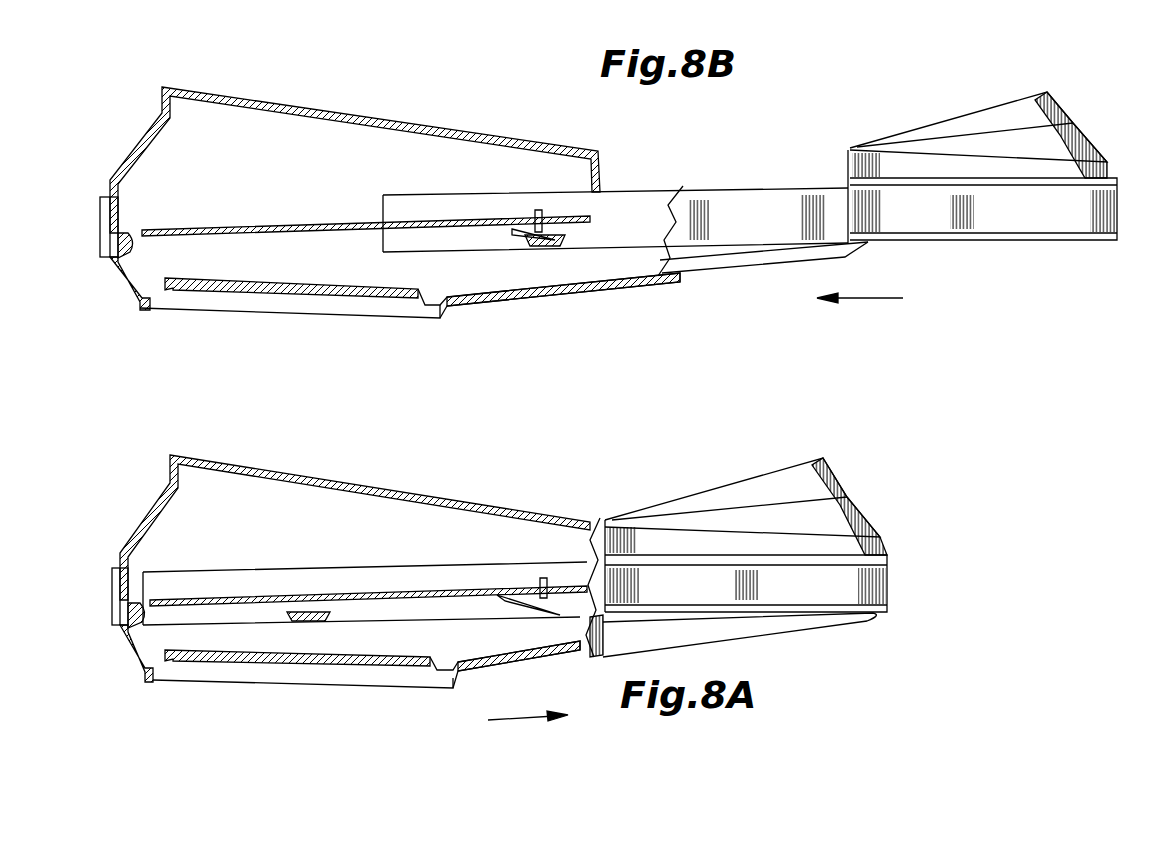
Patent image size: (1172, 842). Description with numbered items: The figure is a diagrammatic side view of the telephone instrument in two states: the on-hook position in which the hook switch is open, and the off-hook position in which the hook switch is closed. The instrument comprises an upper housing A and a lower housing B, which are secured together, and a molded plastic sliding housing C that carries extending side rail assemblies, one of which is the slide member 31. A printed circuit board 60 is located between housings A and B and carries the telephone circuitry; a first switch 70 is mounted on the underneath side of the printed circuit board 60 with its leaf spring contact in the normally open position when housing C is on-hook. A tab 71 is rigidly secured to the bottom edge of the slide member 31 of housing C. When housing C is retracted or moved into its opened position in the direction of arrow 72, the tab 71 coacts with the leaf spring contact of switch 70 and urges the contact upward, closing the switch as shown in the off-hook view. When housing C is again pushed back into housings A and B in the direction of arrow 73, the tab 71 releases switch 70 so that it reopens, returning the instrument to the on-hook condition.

In FIG. 8B, the housing A is at (408, 127).
In FIG. 8A, the housing A is at (385, 496).
In FIG. 8B, the housing B is at (320, 293).
In FIG. 8A, the housing B is at (460, 654).
In FIG. 8B, the housing C is at (997, 137).
In FIG. 8A, the housing C is at (857, 507).
In FIG. 8A, the side rail assembly 31 is at (553, 568).
In FIG. 8B, the printed circuit board 60 is at (263, 227).
In FIG. 8A, the printed circuit board 60 is at (410, 595).
In FIG. 8B, the first switch 70 is at (510, 250).
In FIG. 8A, the first switch 70 is at (520, 607).
In FIG. 8B, the tab 71 is at (545, 247).
In FIG. 8A, the tab 71 is at (283, 622).
In FIG. 8A, the arrow 72 is at (490, 722).
In FIG. 8B, the arrow 73 is at (880, 300).